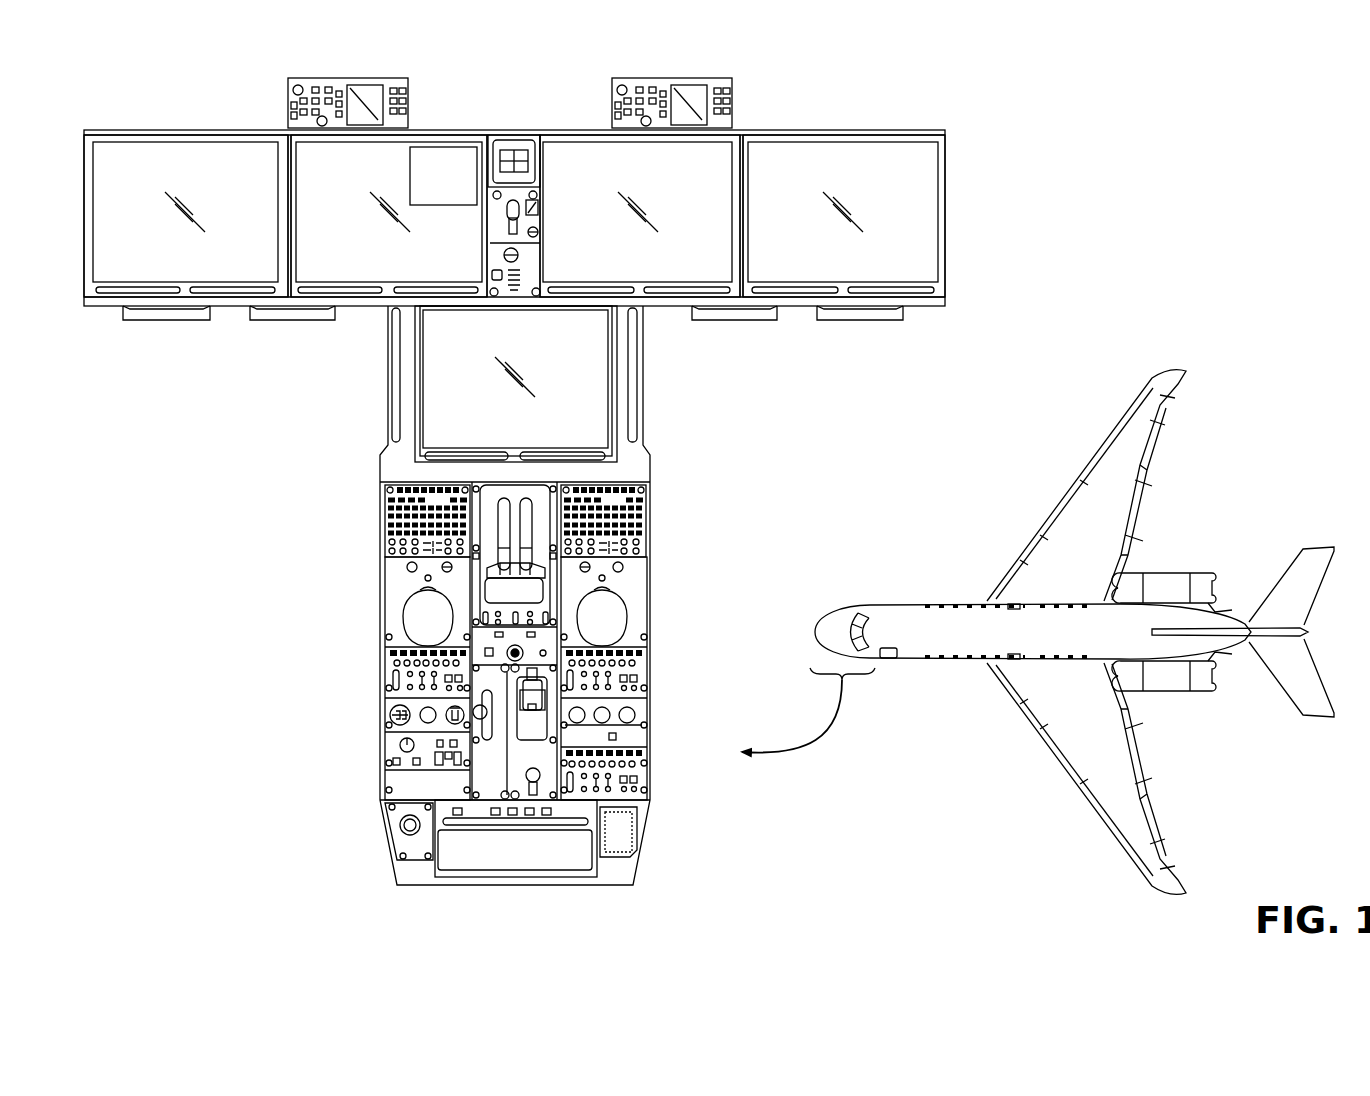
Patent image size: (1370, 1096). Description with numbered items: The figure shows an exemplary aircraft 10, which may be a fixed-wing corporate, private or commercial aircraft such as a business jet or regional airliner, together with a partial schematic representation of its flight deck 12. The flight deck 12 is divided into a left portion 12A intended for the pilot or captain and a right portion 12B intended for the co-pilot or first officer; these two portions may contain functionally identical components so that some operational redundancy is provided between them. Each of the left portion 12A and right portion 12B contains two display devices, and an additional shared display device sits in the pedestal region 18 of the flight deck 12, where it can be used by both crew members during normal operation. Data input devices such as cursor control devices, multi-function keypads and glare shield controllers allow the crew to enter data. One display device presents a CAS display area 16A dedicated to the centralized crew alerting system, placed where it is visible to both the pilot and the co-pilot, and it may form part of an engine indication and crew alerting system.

The aircraft 10 is at (1066, 521).
The flight deck 12 is at (957, 112).
The left portion 12A is at (248, 415).
The right portion 12B is at (856, 415).
The CAS display area 16A is at (435, 155).
The pedestal region 18 is at (358, 710).